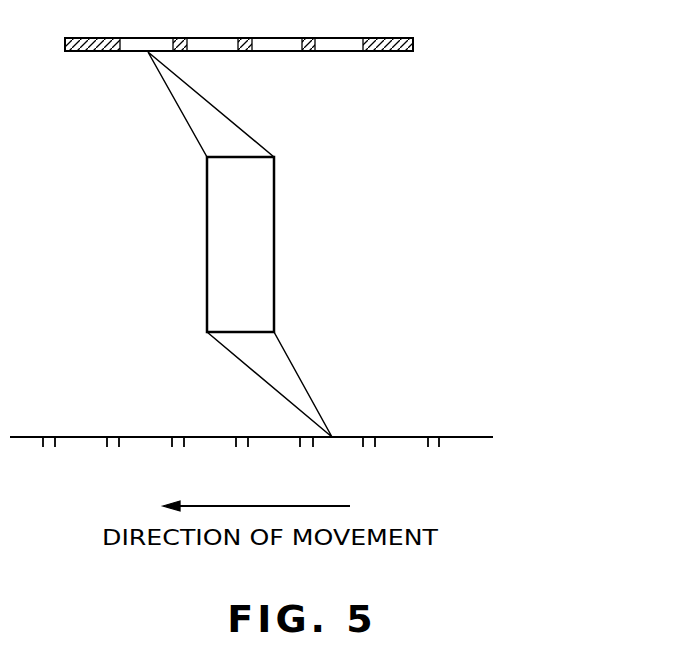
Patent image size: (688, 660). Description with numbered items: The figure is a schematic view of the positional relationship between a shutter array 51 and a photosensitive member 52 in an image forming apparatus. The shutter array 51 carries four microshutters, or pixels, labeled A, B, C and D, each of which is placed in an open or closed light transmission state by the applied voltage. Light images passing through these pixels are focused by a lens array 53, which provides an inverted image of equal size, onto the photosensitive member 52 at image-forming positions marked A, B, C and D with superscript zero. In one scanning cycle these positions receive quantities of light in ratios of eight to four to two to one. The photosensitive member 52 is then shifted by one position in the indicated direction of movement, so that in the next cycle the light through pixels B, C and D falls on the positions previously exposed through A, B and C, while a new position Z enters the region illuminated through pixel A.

The shutter array 51 is at (398, 33).
The photosensitive member 52 is at (475, 446).
The lens array 53 is at (283, 219).